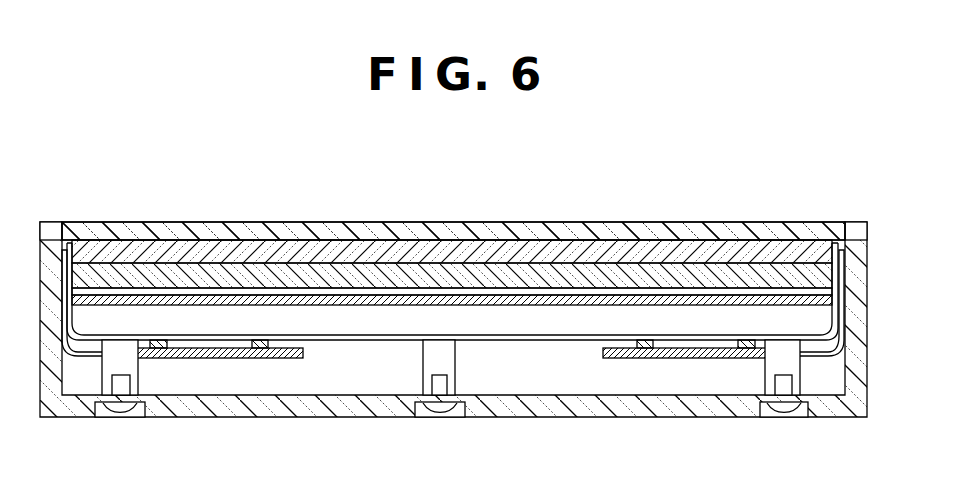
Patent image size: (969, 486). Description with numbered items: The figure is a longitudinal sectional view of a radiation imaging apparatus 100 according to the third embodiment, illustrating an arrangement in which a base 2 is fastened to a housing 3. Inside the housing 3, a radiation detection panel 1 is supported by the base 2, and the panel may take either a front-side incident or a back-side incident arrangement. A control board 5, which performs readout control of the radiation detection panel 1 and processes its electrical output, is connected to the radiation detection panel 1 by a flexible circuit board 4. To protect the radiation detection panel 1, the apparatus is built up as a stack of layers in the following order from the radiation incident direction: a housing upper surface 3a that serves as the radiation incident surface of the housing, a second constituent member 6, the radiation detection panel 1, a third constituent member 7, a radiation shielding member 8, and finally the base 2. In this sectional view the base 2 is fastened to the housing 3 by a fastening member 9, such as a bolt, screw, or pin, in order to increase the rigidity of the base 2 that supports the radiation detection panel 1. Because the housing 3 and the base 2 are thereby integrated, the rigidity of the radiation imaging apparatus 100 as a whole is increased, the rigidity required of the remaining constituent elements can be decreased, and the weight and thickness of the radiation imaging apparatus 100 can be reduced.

The radiation imaging apparatus 100 is at (136, 175).
The radiation detection panel 1 is at (89, 262).
The base 2 is at (98, 340).
The housing 3 is at (860, 234).
The housing upper surface 3a is at (785, 234).
The flexible circuit board 4 is at (78, 352).
The control board 5 is at (216, 360).
The second constituent member 6 is at (315, 252).
The third constituent member 7 is at (385, 287).
The radiation shielding member 8 is at (445, 303).
The fastening member 9 is at (122, 407).